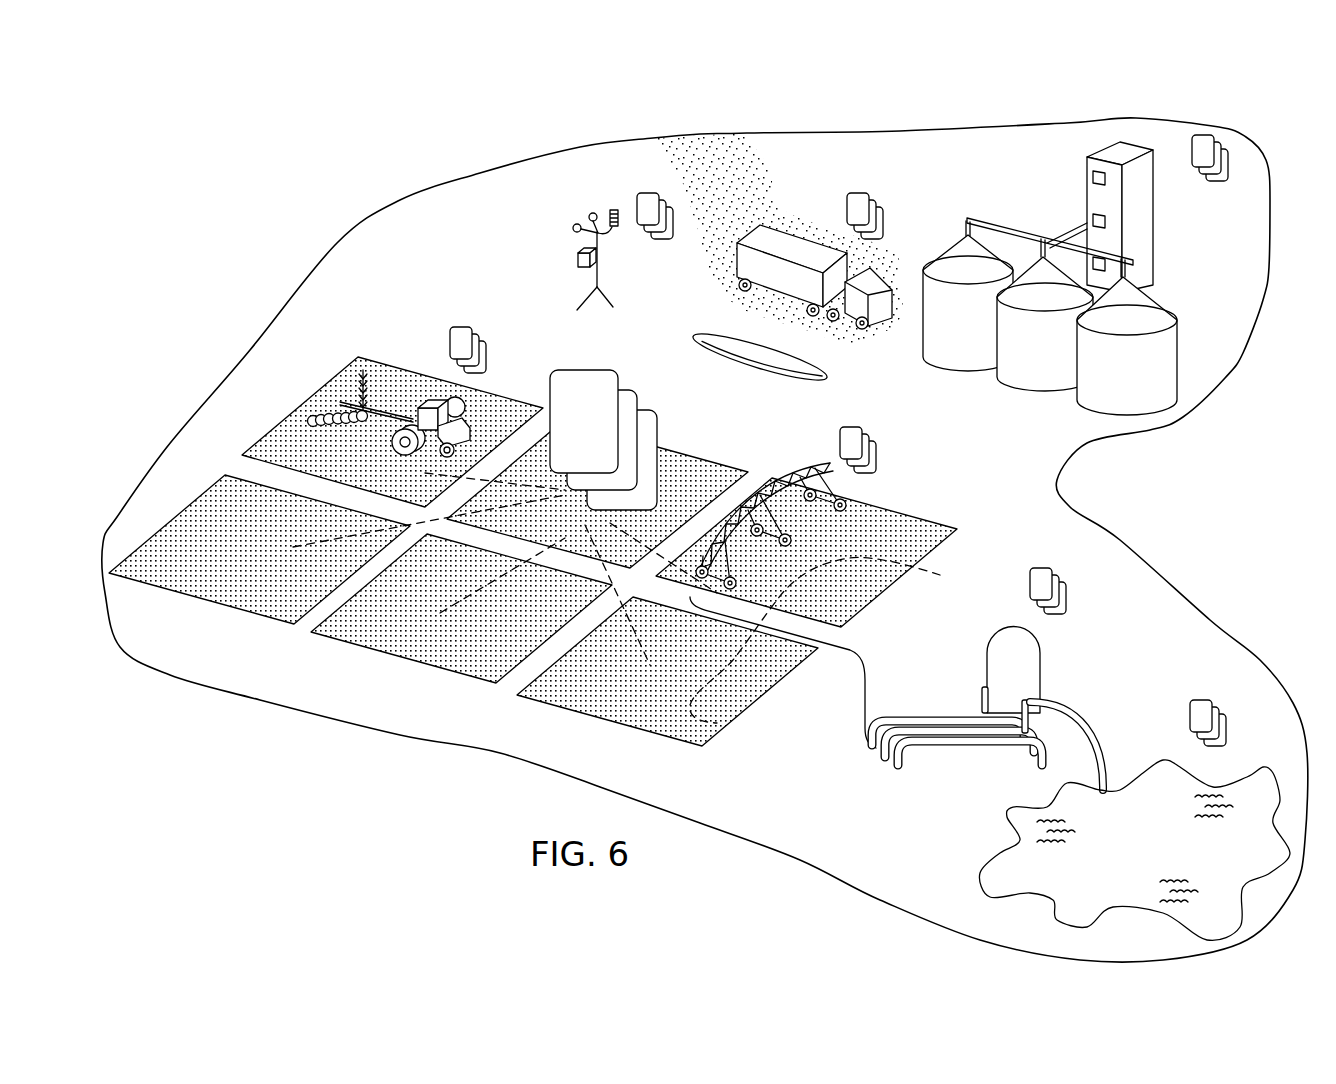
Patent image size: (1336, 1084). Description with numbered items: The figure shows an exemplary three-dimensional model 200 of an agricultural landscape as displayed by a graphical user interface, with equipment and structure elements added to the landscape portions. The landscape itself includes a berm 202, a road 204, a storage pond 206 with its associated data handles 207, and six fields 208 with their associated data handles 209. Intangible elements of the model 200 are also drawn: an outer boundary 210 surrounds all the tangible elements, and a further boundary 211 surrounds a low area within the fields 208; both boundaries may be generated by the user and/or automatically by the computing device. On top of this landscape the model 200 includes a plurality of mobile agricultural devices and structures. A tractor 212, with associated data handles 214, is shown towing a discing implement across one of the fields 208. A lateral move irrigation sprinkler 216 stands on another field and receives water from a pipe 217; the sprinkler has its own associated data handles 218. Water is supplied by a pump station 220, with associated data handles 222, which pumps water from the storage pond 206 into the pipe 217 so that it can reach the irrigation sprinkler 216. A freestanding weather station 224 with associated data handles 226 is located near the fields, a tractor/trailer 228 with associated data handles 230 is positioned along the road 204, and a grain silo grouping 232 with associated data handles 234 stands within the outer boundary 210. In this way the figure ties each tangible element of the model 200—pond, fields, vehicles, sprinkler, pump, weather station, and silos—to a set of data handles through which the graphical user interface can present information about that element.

The three-dimensional model 200 is at (440, 113).
The berm 202 is at (833, 387).
The road 204 is at (780, 173).
The storage pond 206 is at (980, 873).
The data handles 207 is at (1205, 700).
The fields 208 is at (267, 635).
The data handles 209 is at (590, 370).
The outer boundary 210 is at (337, 243).
The boundary 211 is at (713, 667).
The tractor 212 is at (425, 378).
The data handles 214 is at (465, 327).
The lateral move irrigation sprinkler 216 is at (810, 467).
The pipe 217 is at (865, 658).
The data handles 218 is at (877, 447).
The pump station 220 is at (960, 697).
The data handles 222 is at (1040, 568).
The freestanding weather station 224 is at (570, 217).
The data handles 226 is at (647, 193).
The tractor/trailer 228 is at (808, 247).
The data handles 230 is at (881, 216).
The grain silo grouping 232 is at (1027, 210).
The data handles 234 is at (1215, 182).